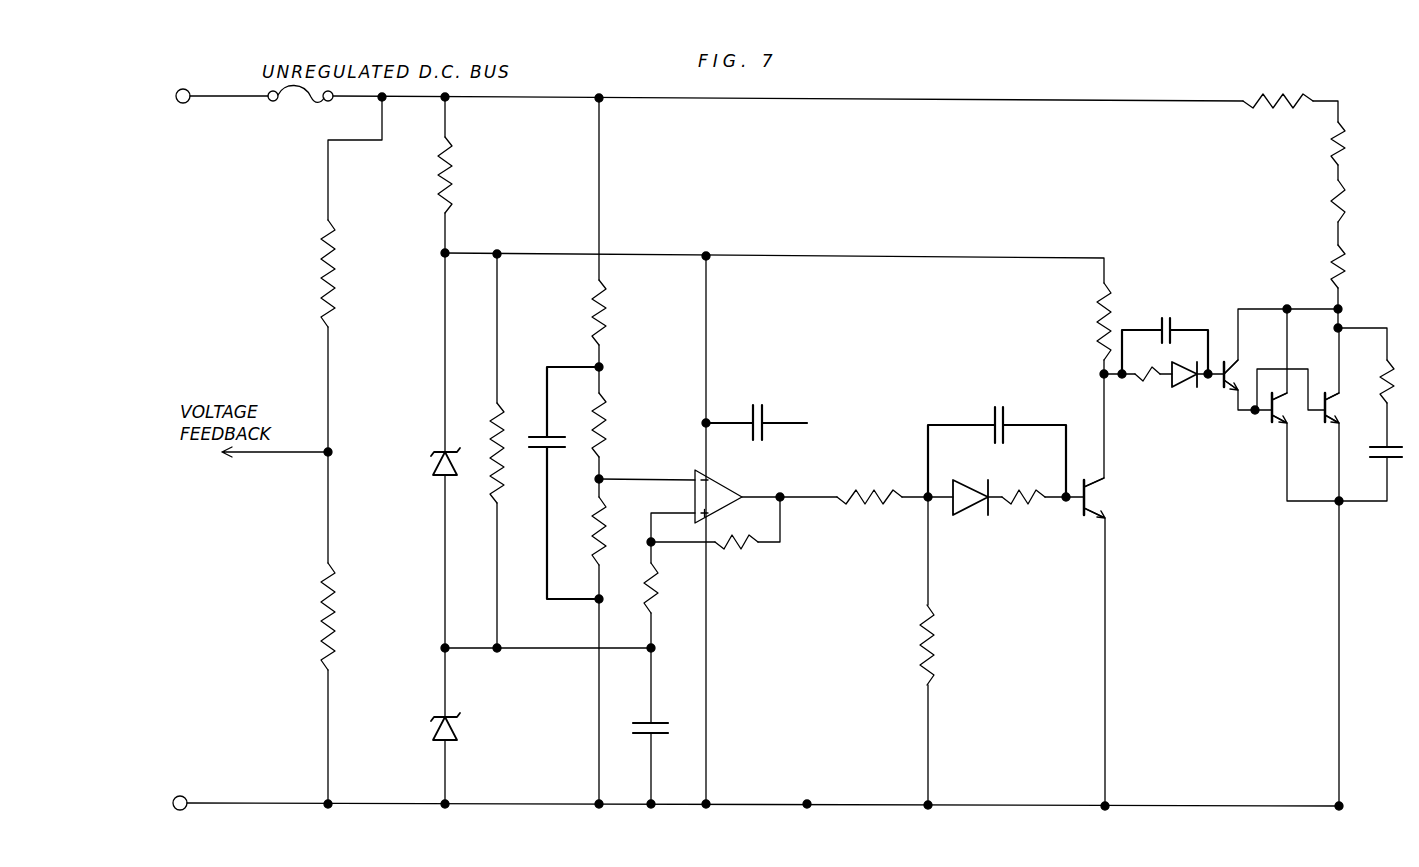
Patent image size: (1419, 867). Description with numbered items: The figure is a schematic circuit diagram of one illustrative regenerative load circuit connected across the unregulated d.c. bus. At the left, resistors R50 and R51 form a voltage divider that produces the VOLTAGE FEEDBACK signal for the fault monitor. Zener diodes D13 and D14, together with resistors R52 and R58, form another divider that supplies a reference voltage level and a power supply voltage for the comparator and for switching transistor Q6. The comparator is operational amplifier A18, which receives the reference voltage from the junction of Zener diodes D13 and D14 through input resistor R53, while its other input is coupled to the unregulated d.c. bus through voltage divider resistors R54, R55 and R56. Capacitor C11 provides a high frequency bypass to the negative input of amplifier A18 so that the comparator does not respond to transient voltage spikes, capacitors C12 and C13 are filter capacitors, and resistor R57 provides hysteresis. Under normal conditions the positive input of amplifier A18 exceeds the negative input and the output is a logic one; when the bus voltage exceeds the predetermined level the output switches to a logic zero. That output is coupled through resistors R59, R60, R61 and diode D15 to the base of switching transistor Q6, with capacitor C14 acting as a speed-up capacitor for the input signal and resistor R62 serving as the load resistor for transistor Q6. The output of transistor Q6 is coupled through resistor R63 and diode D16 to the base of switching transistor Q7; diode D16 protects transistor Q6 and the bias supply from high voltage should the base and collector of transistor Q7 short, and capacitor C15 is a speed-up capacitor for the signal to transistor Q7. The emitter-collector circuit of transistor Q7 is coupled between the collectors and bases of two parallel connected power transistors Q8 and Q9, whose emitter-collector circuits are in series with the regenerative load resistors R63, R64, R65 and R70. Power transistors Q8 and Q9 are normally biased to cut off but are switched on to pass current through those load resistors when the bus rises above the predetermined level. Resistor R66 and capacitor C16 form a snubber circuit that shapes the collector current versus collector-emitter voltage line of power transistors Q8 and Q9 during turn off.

The resistor R50 is at (293, 273).
The resistor R51 is at (292, 616).
The resistor R52 is at (468, 175).
The input resistor R53 is at (657, 597).
The voltage divider resistor R54 is at (621, 312).
The voltage divider resistor R55 is at (621, 425).
The voltage divider resistor R56 is at (607, 535).
The resistor R57 is at (744, 547).
The resistor R58 is at (492, 420).
The resistor R59 is at (869, 480).
The resistor R60 is at (949, 645).
The resistor R61 is at (1023, 483).
The load resistor R62 is at (1073, 321).
The resistor R63 is at (1142, 380).
The regenerative load resistor R64 is at (1312, 201).
The regenerative load resistor R65 is at (1310, 266).
The resistor R66 is at (1388, 368).
The regenerative load resistor R70 is at (1278, 87).
The capacitor C11 is at (540, 432).
The filter capacitor C12 is at (757, 400).
The filter capacitor C13 is at (672, 727).
The speed-up capacitor C14 is at (1000, 400).
The speed-up capacitor C15 is at (1168, 318).
The capacitor C16 is at (1368, 455).
The Zener diode D13 is at (458, 728).
The Zener diode D14 is at (436, 478).
The diode D15 is at (972, 508).
The diode D16 is at (1190, 386).
The operational amplifier A18 is at (720, 497).
The switching transistor Q6 is at (1108, 498).
The switching transistor Q7 is at (1237, 372).
The power transistor Q8 is at (1283, 418).
The power transistor Q9 is at (1330, 405).